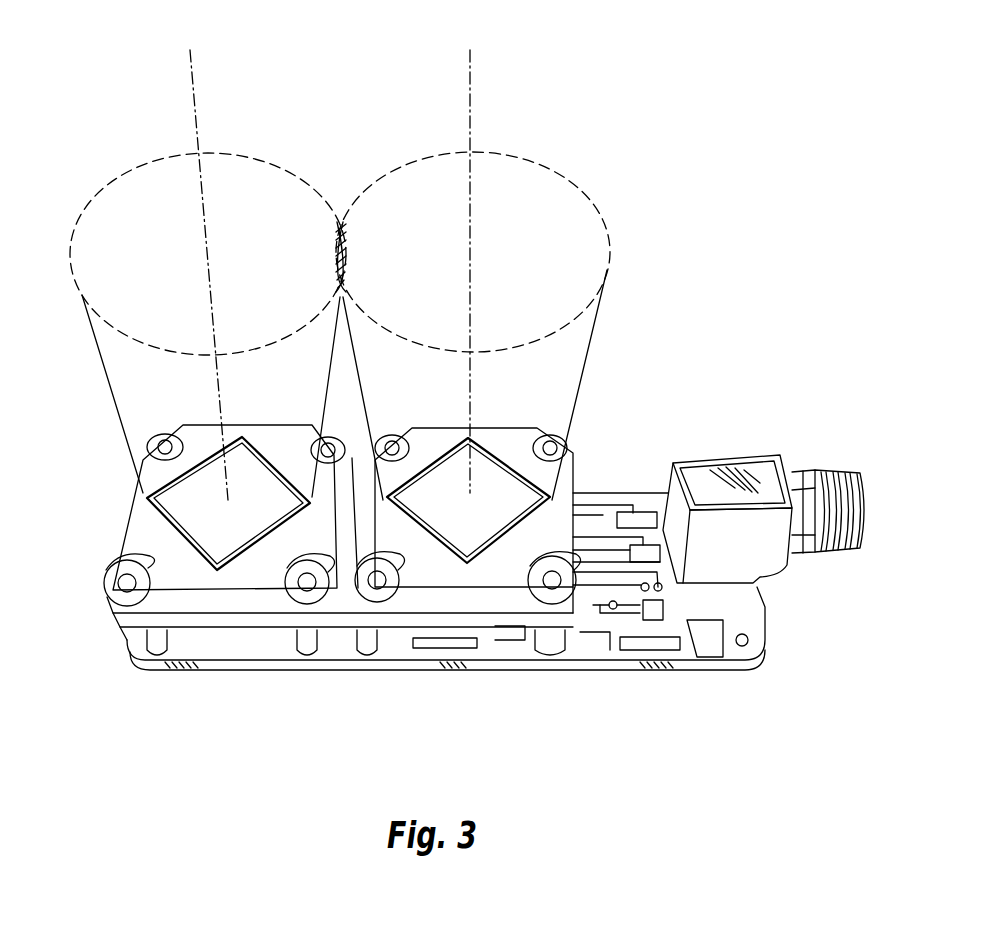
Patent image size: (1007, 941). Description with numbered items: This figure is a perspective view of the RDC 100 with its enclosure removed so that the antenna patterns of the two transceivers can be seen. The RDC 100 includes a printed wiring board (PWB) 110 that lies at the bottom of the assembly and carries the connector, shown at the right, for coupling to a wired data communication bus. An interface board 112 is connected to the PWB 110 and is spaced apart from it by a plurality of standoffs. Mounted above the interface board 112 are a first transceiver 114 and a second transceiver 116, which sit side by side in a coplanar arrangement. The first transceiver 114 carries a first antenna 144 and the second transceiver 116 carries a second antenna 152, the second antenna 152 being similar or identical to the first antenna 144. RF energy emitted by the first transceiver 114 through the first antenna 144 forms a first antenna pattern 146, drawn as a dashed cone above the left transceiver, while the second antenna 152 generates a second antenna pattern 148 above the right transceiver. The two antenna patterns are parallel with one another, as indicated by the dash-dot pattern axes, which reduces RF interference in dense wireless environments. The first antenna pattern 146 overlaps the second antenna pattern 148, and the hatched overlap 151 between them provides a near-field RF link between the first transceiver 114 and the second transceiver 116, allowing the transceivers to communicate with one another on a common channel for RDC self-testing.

The RDC 100 is at (717, 410).
The printed wiring board 110 is at (277, 640).
The interface board 112 is at (200, 603).
The first transceiver 114 is at (127, 530).
The second transceiver 116 is at (560, 500).
The first antenna 144 is at (250, 468).
The first antenna pattern 146 is at (96, 205).
The second antenna pattern 148 is at (585, 195).
The overlap 151 is at (330, 246).
The second antenna 152 is at (490, 470).